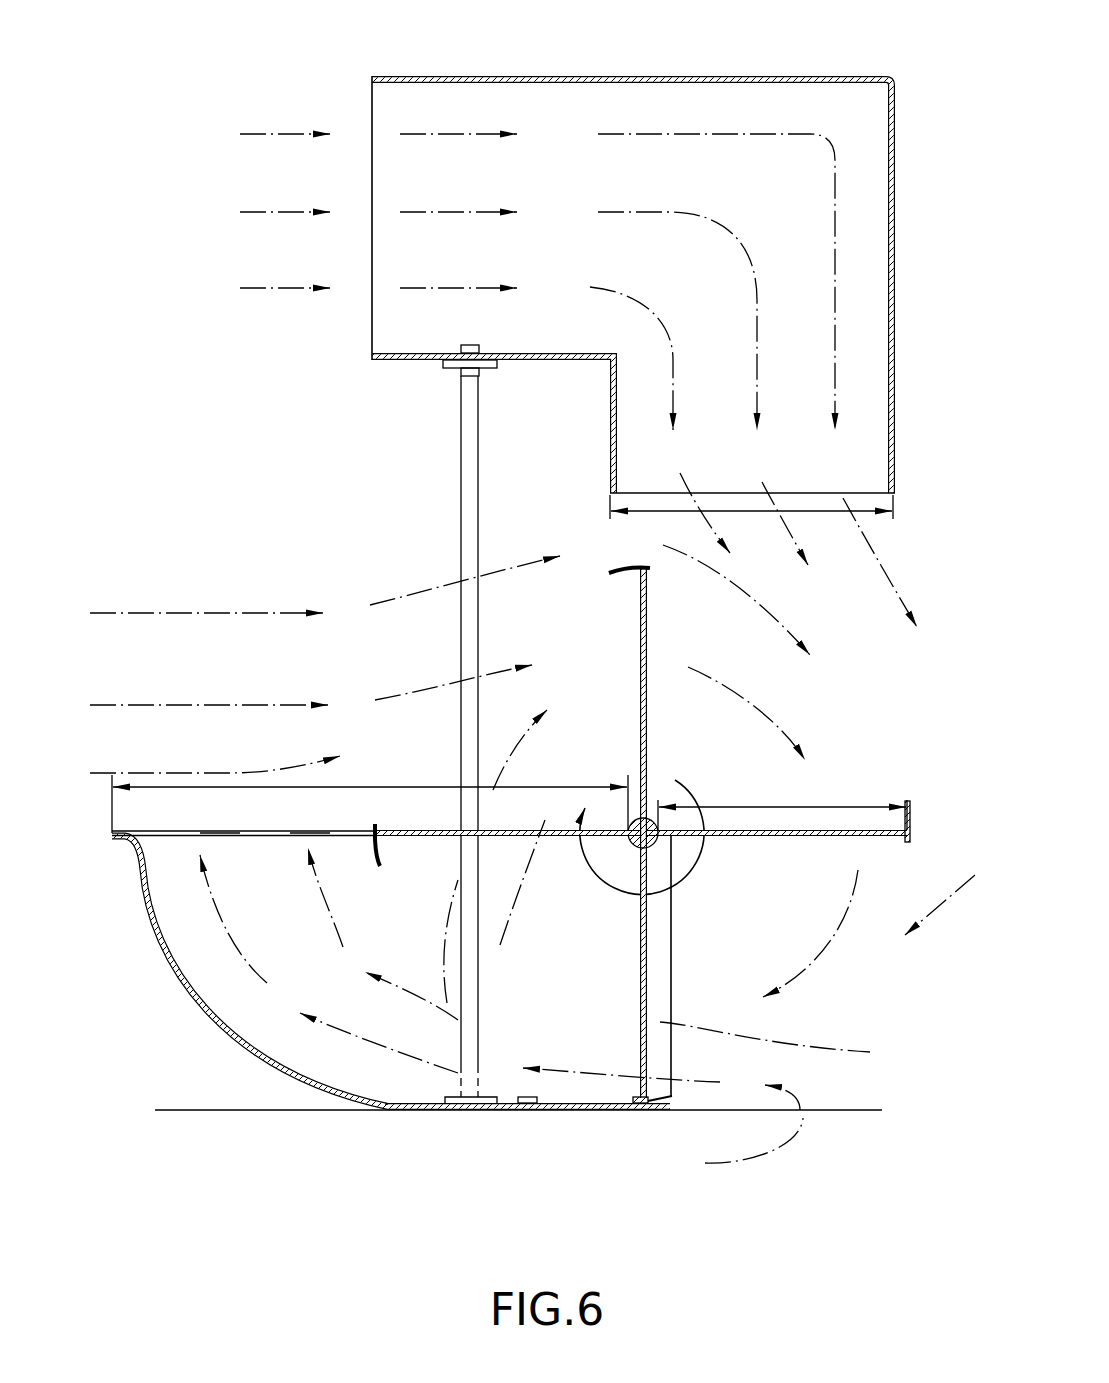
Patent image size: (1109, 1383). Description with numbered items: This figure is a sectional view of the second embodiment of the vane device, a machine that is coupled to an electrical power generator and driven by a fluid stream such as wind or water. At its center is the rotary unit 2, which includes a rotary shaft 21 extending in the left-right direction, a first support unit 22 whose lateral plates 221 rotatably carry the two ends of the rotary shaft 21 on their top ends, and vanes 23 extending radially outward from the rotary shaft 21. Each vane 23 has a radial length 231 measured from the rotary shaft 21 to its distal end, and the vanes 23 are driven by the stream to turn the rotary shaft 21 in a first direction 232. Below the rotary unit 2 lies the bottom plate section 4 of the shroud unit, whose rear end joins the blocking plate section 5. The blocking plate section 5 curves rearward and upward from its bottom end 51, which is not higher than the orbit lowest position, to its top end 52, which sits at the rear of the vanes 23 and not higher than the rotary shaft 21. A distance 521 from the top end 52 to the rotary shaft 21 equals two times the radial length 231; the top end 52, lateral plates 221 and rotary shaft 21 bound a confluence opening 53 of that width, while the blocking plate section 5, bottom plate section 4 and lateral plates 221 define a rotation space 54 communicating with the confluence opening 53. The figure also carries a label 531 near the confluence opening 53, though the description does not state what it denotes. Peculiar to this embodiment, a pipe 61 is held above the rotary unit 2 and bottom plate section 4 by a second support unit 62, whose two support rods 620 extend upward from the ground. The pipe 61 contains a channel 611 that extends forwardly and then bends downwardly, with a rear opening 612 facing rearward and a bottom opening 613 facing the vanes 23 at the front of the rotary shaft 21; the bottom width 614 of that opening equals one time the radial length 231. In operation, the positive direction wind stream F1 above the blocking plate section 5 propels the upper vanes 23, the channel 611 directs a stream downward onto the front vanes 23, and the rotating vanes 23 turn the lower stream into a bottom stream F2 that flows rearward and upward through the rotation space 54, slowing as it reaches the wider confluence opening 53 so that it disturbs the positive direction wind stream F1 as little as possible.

The pipe 61 is at (606, 259).
The channel 611 is at (772, 172).
The rear opening 612 is at (373, 128).
The bottom opening 613 is at (802, 493).
The bottom width 614 is at (812, 508).
The second support unit 62 is at (462, 724).
The support rod 620 is at (470, 441).
The rotary unit 2 is at (761, 835).
The rotary shaft 21 is at (652, 818).
The first support unit 22 is at (721, 966).
The lateral plate 221 is at (665, 977).
The vane 23 is at (776, 835).
The radial length 231 is at (780, 807).
The first direction 232 is at (690, 838).
The blocking plate section 5 is at (353, 964).
The bottom end 51 is at (407, 1110).
The top end 52 is at (221, 814).
The distance 521 is at (378, 787).
The confluence opening 53 is at (220, 832).
The inner surface 531 is at (308, 833).
The rotation space 54 is at (414, 908).
The bottom plate section 4 is at (573, 1108).
The positive direction wind stream F1 is at (185, 610).
The bottom stream F2 is at (372, 1055).